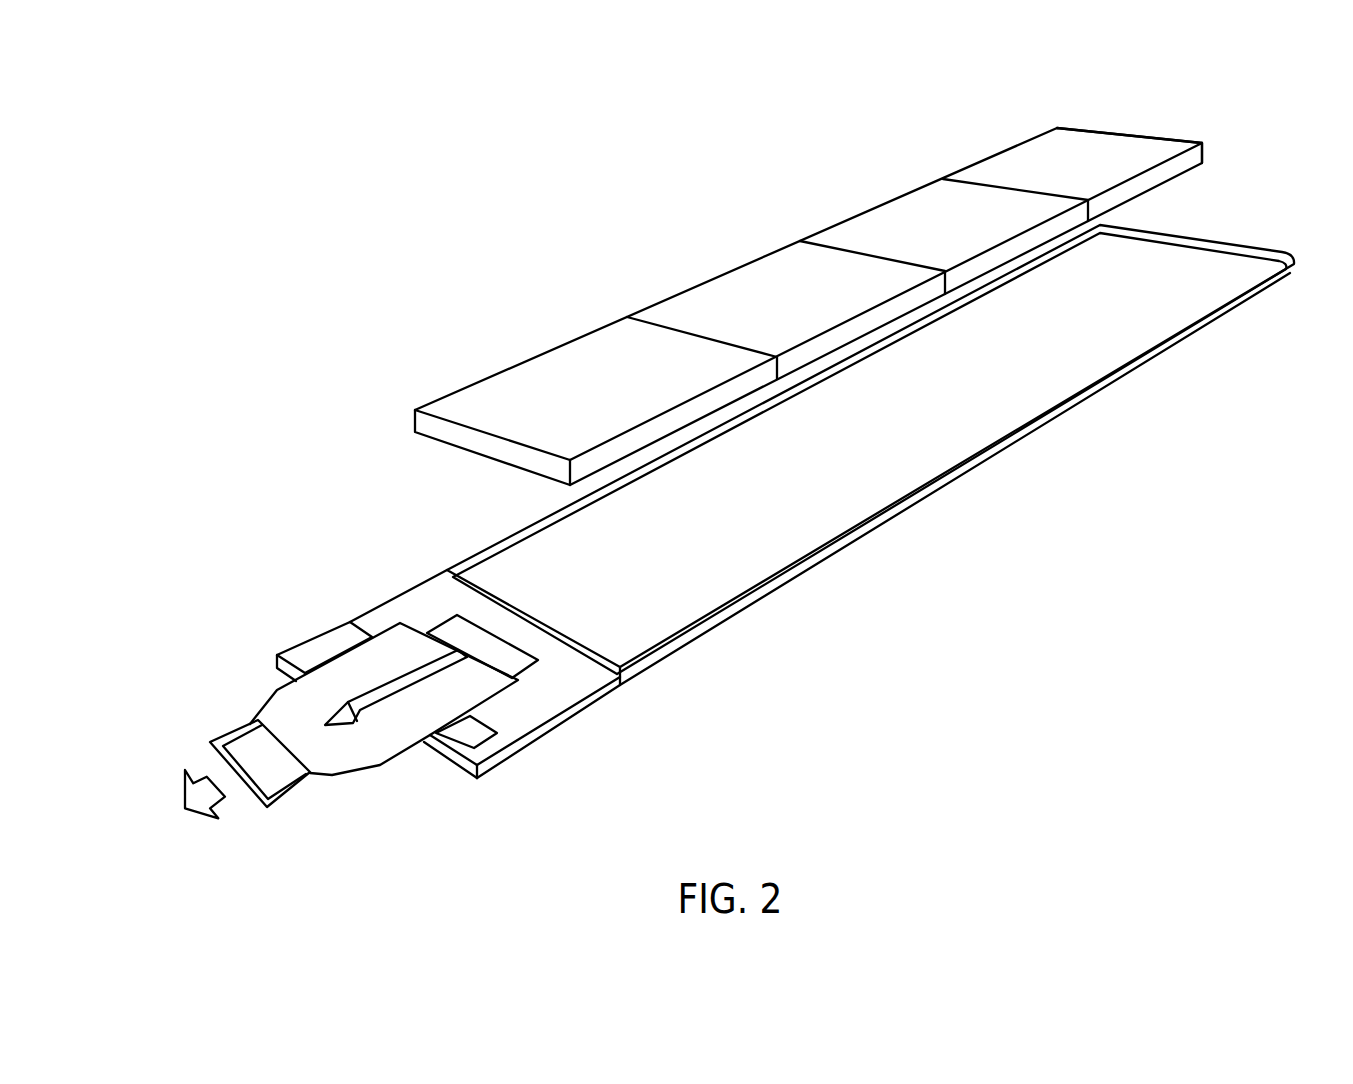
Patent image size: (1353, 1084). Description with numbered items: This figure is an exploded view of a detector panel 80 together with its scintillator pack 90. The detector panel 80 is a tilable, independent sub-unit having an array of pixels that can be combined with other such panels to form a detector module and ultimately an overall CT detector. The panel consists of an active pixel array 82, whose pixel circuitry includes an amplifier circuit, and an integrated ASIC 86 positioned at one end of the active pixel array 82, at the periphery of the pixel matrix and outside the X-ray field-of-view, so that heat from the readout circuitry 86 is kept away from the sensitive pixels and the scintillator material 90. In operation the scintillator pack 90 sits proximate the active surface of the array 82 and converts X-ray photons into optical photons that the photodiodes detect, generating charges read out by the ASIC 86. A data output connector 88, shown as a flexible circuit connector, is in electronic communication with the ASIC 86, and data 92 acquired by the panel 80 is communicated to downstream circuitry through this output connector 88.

The detector panel 80 is at (808, 284).
The scintillator pack 90 is at (1093, 152).
The active pixel array 82 is at (829, 501).
The integrated ASIC 86 is at (1304, 275).
The data output connector 88 is at (219, 719).
The data 92 is at (166, 790).